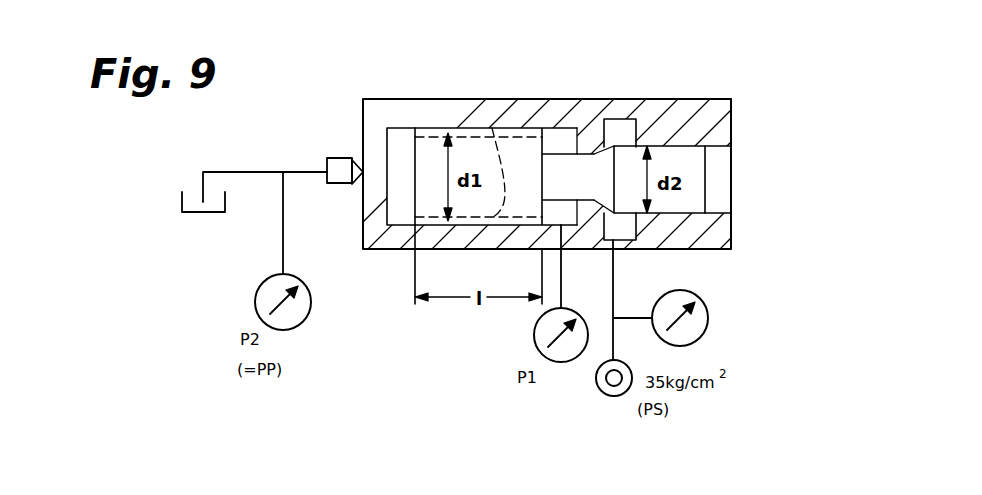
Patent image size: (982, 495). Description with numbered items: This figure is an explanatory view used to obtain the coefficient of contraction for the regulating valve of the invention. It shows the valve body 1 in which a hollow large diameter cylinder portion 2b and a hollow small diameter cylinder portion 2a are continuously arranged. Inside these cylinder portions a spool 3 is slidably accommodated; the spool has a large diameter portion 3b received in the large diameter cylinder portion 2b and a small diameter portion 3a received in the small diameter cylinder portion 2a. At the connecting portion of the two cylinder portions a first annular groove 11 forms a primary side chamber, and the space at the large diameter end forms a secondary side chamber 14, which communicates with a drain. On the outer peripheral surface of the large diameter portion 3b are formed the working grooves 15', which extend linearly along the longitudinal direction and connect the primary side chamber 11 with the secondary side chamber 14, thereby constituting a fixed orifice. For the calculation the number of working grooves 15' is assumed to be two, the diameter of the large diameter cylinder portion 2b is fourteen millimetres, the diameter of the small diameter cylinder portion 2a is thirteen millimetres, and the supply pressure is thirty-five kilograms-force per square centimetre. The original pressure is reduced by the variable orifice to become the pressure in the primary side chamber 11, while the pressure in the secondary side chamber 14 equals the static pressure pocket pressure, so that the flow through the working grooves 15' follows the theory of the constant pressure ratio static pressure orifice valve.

The valve body 1 is at (722, 100).
The small diameter cylinder portion 2a is at (721, 147).
The large diameter cylinder portion 2b is at (460, 131).
The spool 3 is at (624, 151).
The small diameter portion 3a is at (688, 148).
The large diameter portion 3b is at (543, 140).
The first annular groove 11 is at (560, 131).
The secondary side chamber 14 is at (400, 137).
The working grooves 15' is at (511, 144).